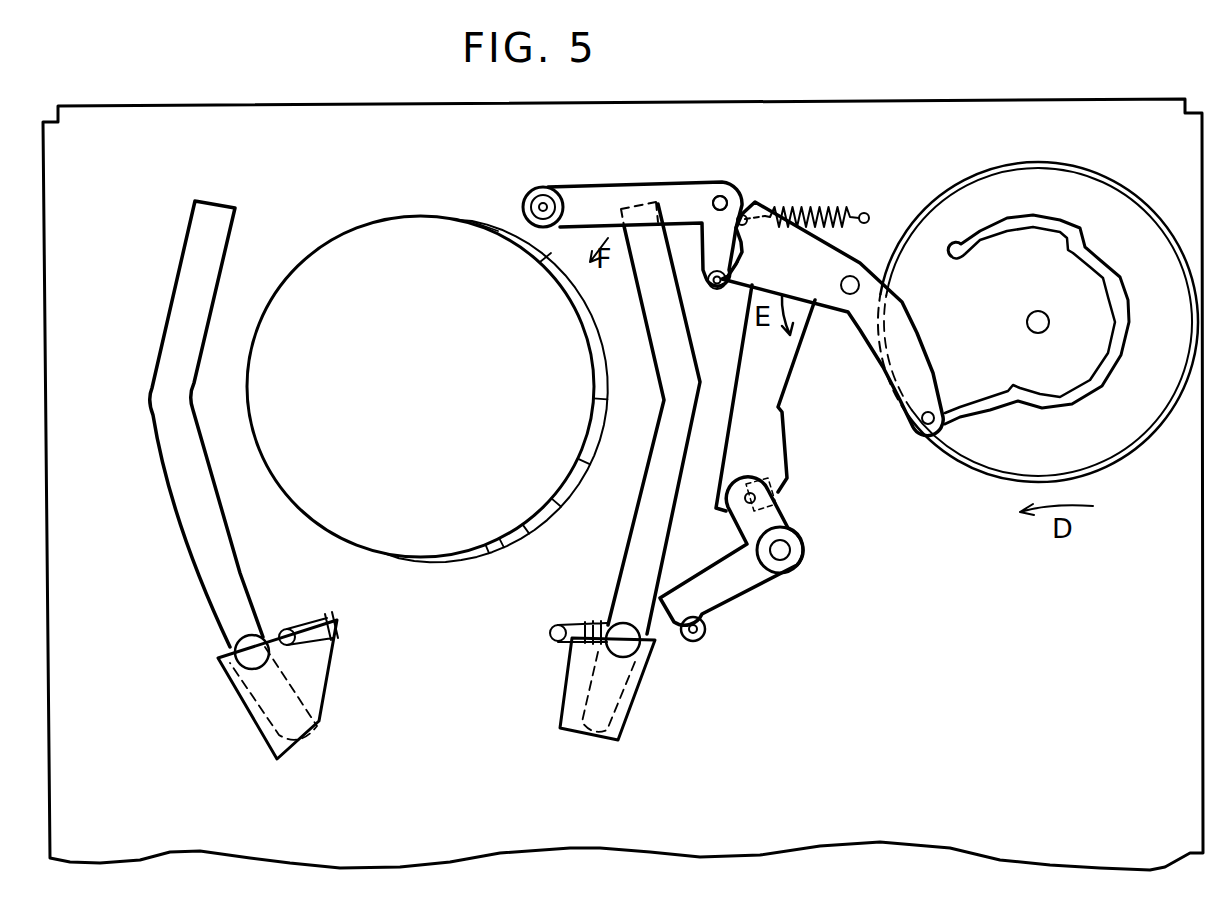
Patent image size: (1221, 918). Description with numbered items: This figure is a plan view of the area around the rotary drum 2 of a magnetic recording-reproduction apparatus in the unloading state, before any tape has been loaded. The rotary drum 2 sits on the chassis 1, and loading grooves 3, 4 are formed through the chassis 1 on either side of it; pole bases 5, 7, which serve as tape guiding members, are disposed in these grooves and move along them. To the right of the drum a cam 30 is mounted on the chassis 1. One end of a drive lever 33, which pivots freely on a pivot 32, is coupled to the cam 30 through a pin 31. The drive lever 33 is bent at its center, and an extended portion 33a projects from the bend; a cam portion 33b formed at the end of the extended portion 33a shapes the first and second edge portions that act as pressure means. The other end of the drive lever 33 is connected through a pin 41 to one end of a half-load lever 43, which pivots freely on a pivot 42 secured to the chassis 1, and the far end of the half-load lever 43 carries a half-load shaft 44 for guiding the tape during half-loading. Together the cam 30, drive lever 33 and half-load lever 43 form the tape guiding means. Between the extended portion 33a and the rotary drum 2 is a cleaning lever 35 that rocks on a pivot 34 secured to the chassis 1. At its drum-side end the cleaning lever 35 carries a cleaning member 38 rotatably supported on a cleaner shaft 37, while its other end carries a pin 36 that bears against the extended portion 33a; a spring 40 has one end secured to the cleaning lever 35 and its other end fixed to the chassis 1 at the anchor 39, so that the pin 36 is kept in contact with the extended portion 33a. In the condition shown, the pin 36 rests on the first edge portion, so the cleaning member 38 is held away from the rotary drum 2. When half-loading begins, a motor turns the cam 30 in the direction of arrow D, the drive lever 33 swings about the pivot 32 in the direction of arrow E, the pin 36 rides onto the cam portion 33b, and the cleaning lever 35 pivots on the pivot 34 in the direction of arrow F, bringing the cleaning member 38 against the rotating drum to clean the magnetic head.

The chassis 1 is at (315, 113).
The rotary drum 2 is at (377, 245).
The loading groove 3 is at (660, 560).
The loading groove 4 is at (196, 378).
The pole base 5 is at (628, 705).
The pole base 7 is at (300, 680).
The cam 30 is at (1075, 185).
The pin 31 is at (930, 434).
The pivot 32 is at (850, 295).
The drive lever 33 is at (813, 323).
The extended portion 33a is at (740, 290).
The cam portion 33b is at (740, 256).
The pivot 34 is at (727, 200).
The cleaning lever 35 is at (672, 187).
The pin 36 is at (707, 282).
The cleaner shaft 37 is at (553, 200).
The cleaning member 38 is at (543, 195).
The spring anchor pin 39 is at (867, 214).
The spring 40 is at (822, 215).
The pin 41 is at (770, 490).
The pivot 42 is at (790, 550).
The half-load lever 43 is at (750, 582).
The half-load shaft 44 is at (705, 632).